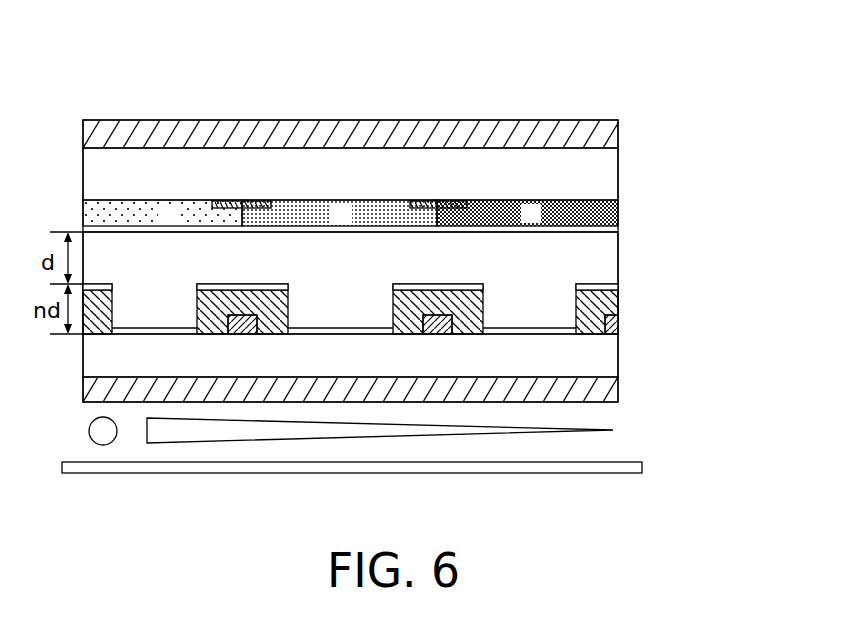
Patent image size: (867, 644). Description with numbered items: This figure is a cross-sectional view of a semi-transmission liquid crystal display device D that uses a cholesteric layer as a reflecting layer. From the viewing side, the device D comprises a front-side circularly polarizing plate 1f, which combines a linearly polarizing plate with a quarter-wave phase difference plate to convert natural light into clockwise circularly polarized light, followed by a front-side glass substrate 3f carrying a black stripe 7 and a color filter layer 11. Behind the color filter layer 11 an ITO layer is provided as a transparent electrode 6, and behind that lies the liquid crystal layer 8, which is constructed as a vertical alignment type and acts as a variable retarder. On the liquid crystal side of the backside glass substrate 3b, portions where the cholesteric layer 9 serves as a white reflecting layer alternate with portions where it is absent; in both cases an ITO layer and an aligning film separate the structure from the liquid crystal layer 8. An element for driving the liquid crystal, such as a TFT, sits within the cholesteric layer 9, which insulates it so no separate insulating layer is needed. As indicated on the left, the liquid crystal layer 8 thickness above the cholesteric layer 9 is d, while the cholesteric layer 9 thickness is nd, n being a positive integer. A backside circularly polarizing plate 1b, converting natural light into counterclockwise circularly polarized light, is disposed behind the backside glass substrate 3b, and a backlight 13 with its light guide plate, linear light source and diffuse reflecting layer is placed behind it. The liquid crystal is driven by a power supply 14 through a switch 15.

The semi-transmission liquid crystal display device D is at (567, 78).
The front-side circularly polarizing plate 1f is at (610, 133).
The front-side glass substrate 3f is at (613, 170).
The color filter layer 11 is at (618, 210).
The black stripe 7 is at (253, 201).
The transparent electrode (ITO layer) 6 is at (441, 233).
The liquid crystal layer 8 is at (609, 256).
The cholesteric layer 9 is at (609, 302).
The switch 15 is at (243, 334).
The backside glass substrate 3b is at (609, 353).
The backside circularly polarizing plate 1b is at (613, 390).
The backlight 13 is at (613, 430).
The power supply 14 is at (640, 462).